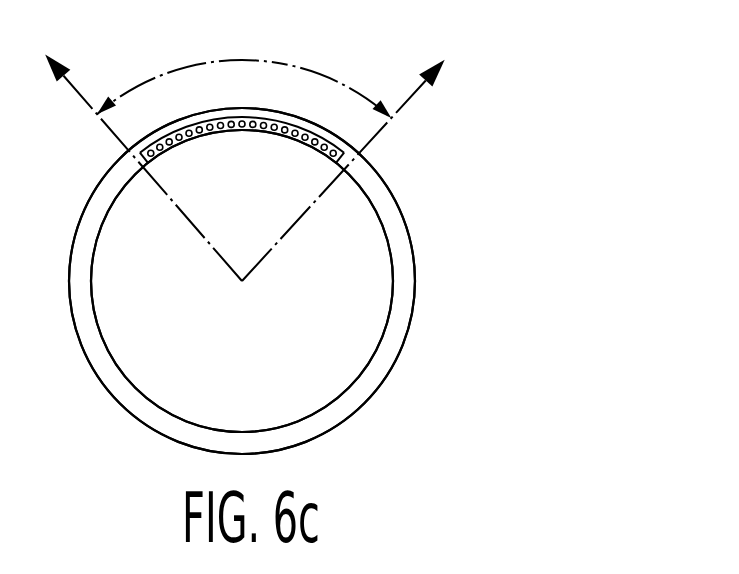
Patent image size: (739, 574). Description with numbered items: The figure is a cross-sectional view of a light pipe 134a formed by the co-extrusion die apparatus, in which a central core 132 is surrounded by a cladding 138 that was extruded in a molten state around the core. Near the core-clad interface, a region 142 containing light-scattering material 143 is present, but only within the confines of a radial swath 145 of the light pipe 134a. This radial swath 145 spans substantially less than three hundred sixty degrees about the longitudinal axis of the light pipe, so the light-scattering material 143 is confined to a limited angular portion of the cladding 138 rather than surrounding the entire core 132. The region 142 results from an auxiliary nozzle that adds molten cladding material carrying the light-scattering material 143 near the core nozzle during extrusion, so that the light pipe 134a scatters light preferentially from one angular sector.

The core 132 is at (267, 382).
The light pipe 134a is at (432, 197).
The cladding 138 is at (410, 317).
The region 142 is at (208, 118).
The light-scattering material 143 is at (188, 132).
The radial swath 145 is at (290, 63).